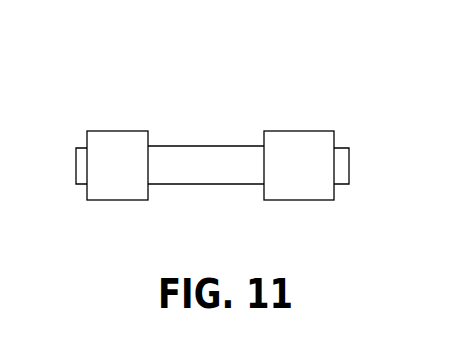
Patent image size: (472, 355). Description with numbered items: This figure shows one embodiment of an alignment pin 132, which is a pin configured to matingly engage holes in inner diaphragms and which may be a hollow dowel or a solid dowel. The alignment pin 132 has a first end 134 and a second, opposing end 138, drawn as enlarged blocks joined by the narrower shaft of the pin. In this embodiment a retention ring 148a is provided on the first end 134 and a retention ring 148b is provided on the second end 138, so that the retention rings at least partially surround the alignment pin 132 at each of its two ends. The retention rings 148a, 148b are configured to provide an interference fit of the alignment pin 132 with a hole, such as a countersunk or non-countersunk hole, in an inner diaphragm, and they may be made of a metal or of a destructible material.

The alignment pin 132 is at (230, 142).
The first end 134 is at (98, 207).
The second end 138 is at (323, 206).
The retention ring 148a is at (117, 152).
The retention ring 148b is at (287, 152).